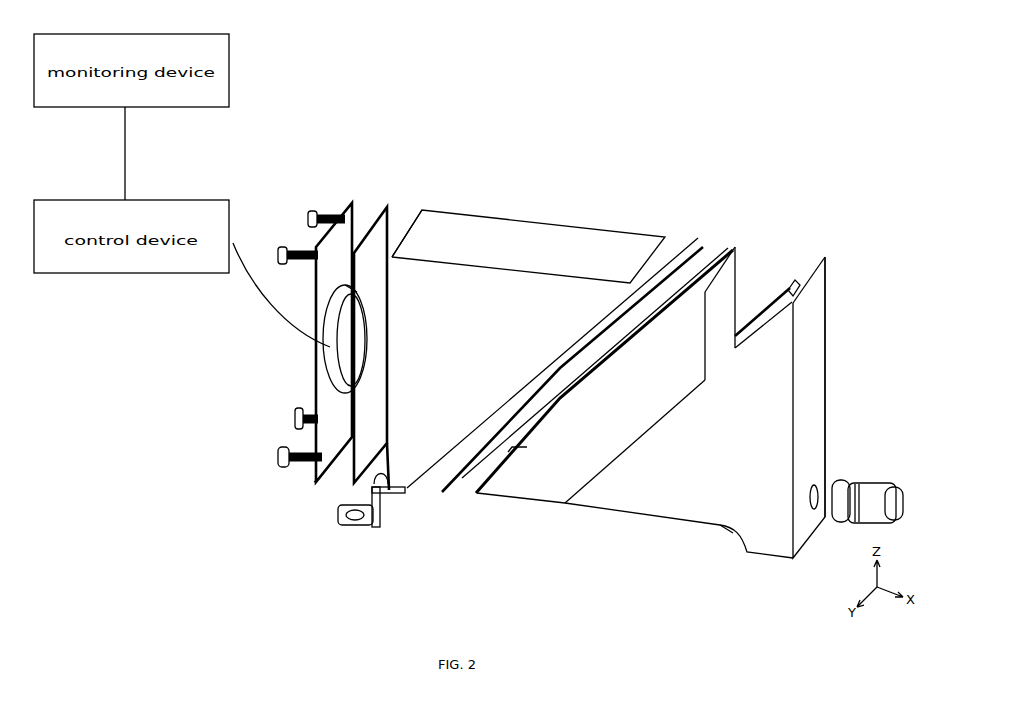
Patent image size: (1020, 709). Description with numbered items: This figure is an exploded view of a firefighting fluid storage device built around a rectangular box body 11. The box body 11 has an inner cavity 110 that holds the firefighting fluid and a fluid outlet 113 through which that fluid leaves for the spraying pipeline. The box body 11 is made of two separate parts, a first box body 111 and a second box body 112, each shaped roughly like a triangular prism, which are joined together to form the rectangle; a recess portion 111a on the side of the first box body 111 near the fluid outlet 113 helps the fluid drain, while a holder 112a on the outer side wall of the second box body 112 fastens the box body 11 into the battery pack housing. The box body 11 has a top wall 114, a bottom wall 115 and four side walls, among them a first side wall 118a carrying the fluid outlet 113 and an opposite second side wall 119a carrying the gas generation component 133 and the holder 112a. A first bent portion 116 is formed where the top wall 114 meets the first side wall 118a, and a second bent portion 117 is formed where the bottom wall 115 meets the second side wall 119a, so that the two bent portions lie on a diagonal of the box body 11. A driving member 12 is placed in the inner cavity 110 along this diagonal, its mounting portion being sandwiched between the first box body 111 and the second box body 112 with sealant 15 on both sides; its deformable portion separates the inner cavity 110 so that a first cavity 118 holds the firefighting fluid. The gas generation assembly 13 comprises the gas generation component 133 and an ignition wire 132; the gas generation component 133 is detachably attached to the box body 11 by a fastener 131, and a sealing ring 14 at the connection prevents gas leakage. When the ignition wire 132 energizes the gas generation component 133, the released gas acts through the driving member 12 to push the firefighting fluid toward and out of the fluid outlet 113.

The box body 11 is at (460, 128).
The driving member 12 is at (735, 247).
The gas generation assembly 13 is at (242, 387).
The sealing ring 14 is at (386, 206).
The sealant 15 is at (702, 243).
The inner cavity 110 is at (795, 278).
The first box body 111 is at (885, 315).
The recess portion 111a is at (731, 542).
The second box body 112 is at (458, 168).
The holder 112a is at (347, 520).
The fluid outlet 113 is at (875, 493).
The top wall 114 is at (560, 238).
The bottom wall 115 is at (652, 518).
The first bent portion 116 is at (818, 257).
The second bent portion 117 is at (400, 497).
The first cavity 118 is at (795, 280).
The first side wall 118a is at (825, 404).
The second side wall 119a is at (314, 487).
The fastener 131 is at (318, 212).
The ignition wire 132 is at (264, 302).
The gas generation component 133 is at (330, 379).